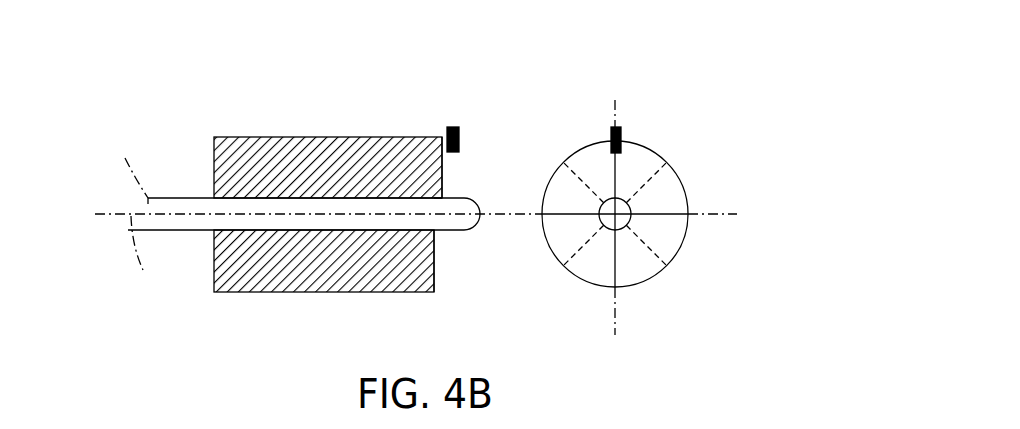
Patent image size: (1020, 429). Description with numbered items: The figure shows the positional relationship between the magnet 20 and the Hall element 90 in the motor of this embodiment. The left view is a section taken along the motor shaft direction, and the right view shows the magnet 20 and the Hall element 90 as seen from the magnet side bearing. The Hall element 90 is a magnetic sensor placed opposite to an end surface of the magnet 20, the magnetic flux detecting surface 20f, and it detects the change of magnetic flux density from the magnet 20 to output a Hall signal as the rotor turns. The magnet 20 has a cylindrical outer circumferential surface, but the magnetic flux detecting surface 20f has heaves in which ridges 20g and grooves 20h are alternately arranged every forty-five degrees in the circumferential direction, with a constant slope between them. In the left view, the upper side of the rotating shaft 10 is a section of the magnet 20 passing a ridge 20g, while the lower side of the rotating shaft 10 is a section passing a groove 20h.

The rotating shaft 10 is at (173, 210).
The magnet 20 is at (333, 168).
The Hall element 90 is at (453, 127).
The magnetic flux detecting surface 20f is at (474, 177).
The ridge 20g is at (616, 162).
The groove 20h is at (430, 283).